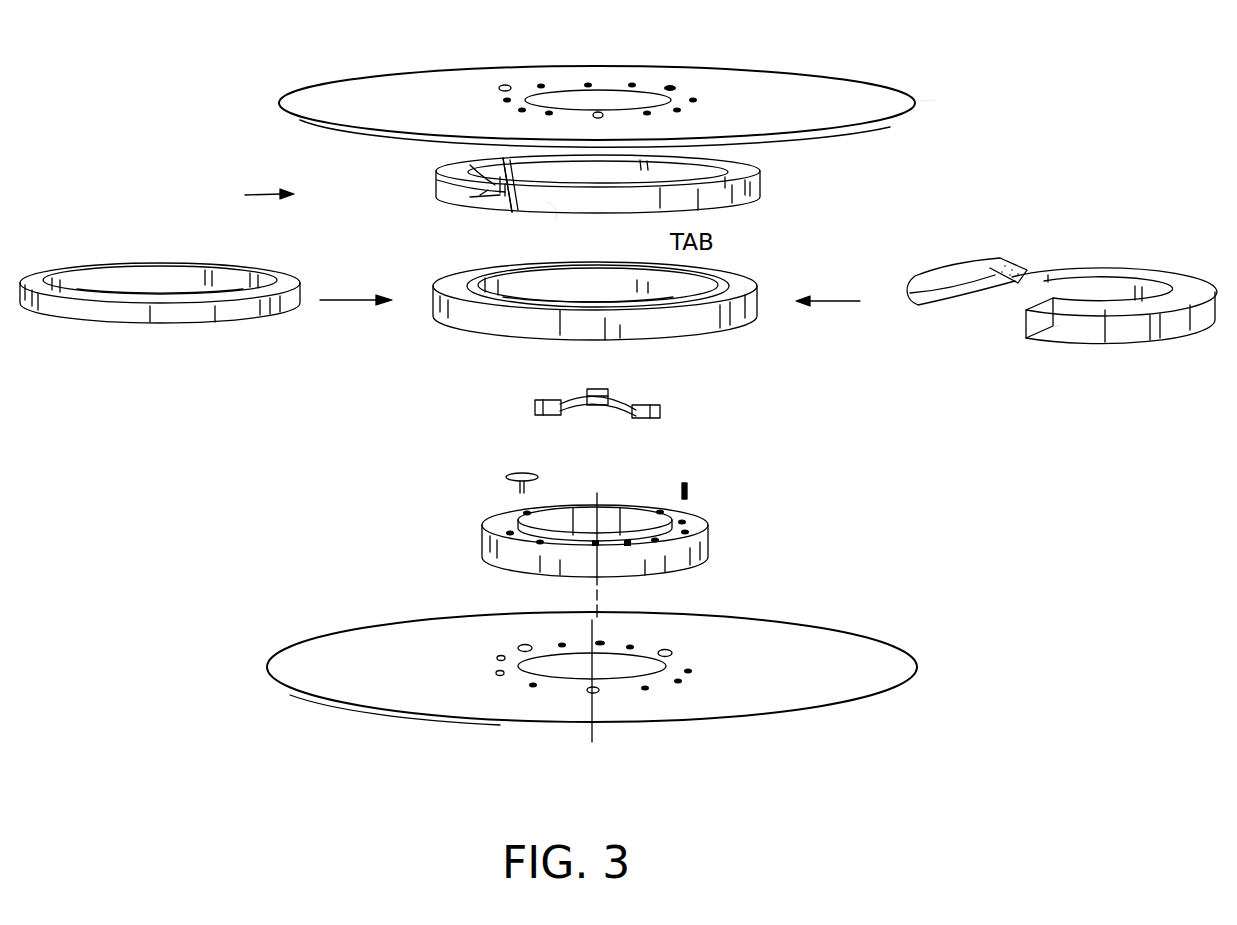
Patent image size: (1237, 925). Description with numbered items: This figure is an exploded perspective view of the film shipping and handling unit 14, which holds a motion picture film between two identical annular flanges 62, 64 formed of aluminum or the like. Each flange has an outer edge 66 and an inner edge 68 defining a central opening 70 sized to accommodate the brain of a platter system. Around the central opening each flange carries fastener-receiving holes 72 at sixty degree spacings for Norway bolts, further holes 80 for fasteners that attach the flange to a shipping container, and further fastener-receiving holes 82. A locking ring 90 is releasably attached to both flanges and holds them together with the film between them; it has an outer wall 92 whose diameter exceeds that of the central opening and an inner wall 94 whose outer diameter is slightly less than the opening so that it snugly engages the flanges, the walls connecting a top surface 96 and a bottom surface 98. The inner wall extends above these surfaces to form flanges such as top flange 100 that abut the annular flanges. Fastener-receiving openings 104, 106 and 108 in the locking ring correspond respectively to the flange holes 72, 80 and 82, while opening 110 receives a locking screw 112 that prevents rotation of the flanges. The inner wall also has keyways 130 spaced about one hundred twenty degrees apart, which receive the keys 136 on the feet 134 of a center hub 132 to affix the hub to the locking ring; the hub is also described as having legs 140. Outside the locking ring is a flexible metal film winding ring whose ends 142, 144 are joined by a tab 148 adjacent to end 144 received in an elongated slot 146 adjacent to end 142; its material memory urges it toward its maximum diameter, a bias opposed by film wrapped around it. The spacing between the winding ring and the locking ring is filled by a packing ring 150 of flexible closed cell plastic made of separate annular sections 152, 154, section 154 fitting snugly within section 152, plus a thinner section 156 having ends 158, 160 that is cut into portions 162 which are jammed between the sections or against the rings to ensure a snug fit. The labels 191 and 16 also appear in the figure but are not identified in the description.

The annular flange 62 is at (848, 105).
The annular flange 64 is at (410, 695).
The outer edge 66 is at (918, 101).
The inner edge 68 is at (640, 93).
The central opening 70 is at (580, 97).
The fastener-receiving holes 72 is at (597, 110).
The fastener accommodating holes 80 is at (533, 690).
The fastener-receiving holes 82 is at (680, 684).
The locking ring 90 is at (448, 520).
The outer wall 92 is at (480, 552).
The inner wall 94 is at (560, 515).
The top surface 96 is at (707, 528).
The bottom surface 98 is at (522, 573).
The top flange 100 is at (690, 510).
The fastener-receiving openings 104 is at (597, 545).
The fastener-receiving openings 106 is at (628, 546).
The fastener-receiving openings 108 is at (657, 543).
The fastener-receiving opening 110 is at (707, 535).
The locking screws 112 is at (690, 490).
The keyways 130 is at (607, 522).
The center hub 132 is at (535, 407).
The feet 134 is at (652, 404).
The key 136 is at (662, 411).
The legs 140 is at (440, 183).
The end 142 is at (512, 210).
The end 144 is at (492, 184).
The elongated slot 146 is at (472, 200).
The tab 148 is at (548, 203).
The packing ring 150 is at (430, 326).
The annular section 152 is at (745, 292).
The annular section 154 is at (715, 284).
The section 156 is at (1127, 270).
The end 158 is at (1008, 262).
The end 160 is at (1024, 333).
The portion 162 is at (1085, 335).
The assembly direction 191 is at (245, 195).
The shipping and handling unit 14 is at (629, 240).
The pin 16 is at (521, 467).